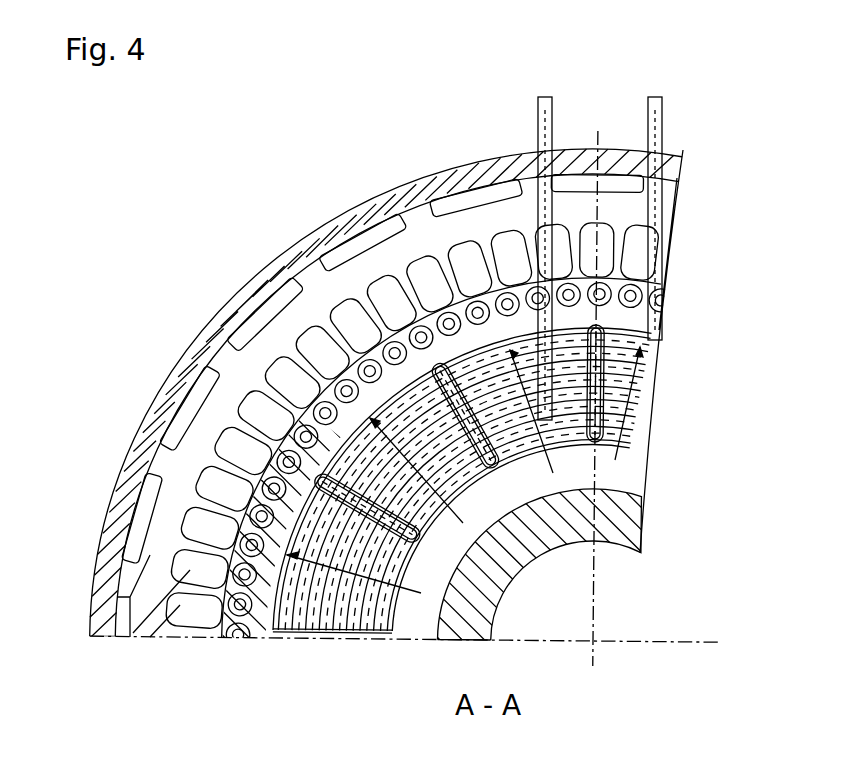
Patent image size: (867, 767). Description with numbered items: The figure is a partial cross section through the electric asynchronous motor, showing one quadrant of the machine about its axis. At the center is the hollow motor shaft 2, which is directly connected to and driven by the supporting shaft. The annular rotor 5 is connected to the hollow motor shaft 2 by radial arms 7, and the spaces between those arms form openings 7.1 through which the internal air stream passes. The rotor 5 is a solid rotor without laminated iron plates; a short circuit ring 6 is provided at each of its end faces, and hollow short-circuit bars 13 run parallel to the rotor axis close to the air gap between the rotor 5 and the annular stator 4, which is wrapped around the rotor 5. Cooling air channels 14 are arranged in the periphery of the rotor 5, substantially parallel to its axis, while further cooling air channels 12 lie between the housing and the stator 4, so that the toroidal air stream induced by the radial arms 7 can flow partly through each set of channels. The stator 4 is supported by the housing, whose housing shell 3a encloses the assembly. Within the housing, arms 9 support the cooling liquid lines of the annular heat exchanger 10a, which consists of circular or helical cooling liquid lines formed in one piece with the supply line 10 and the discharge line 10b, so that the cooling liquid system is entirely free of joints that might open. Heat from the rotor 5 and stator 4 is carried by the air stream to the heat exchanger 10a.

The hollow motor shaft 2 is at (617, 547).
The housing shell 3a is at (427, 222).
The stator 4 is at (402, 183).
The rotor 5 is at (262, 638).
The short circuit ring 6 is at (253, 640).
The radial arms 7 is at (330, 622).
The openings 7.1 is at (432, 377).
The arms 9 is at (378, 347).
The supply line 10 is at (540, 128).
The heat exchanger 10a is at (664, 352).
The discharge line 10b is at (660, 125).
The cooling air channels 12 is at (162, 400).
The hollow short-circuit bars 13 is at (238, 636).
The cooling air channels 14 is at (224, 466).